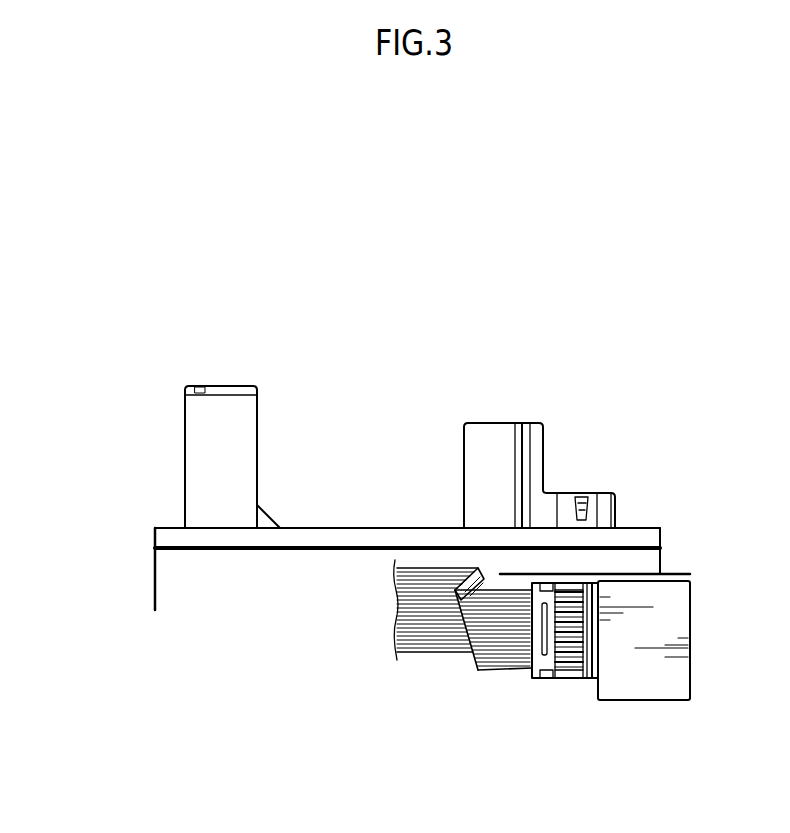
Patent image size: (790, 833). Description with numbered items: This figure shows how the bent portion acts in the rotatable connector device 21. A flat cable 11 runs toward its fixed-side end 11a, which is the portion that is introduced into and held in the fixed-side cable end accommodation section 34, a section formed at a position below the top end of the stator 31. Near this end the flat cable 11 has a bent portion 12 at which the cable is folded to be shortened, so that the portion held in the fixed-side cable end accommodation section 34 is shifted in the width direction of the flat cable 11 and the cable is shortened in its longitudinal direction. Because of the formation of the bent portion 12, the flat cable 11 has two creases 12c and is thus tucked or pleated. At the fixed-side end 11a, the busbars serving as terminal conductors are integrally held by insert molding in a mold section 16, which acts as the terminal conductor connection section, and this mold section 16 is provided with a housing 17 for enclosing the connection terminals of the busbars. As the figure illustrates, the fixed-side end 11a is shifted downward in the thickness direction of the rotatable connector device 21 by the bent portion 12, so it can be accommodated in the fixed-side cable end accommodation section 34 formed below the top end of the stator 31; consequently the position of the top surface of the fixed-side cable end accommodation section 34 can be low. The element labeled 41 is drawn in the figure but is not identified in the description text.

The flat cable 11 is at (387, 710).
The fixed-side end 11a is at (638, 520).
The bent portion 12 is at (455, 558).
The creases 12c is at (480, 578).
The mold section 16 is at (567, 678).
The housing 17 is at (690, 683).
The rotatable connector device 21 is at (635, 392).
The stator 31 is at (137, 596).
The fixed-side cable end accommodation section 34 is at (675, 570).
The base plate 41 is at (134, 528).